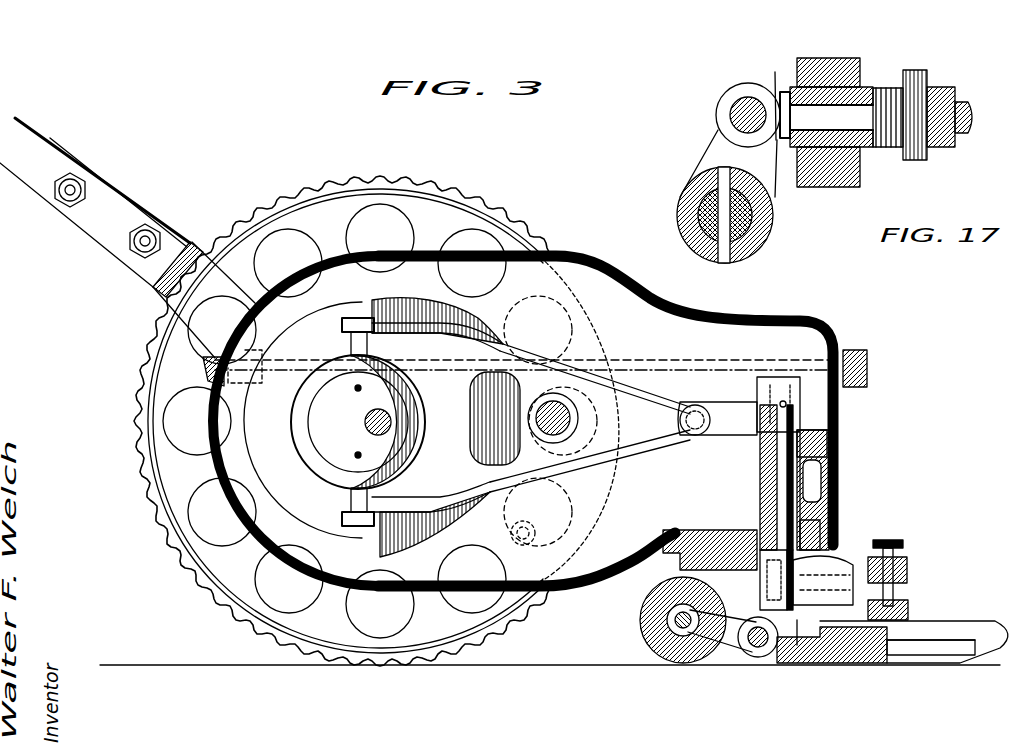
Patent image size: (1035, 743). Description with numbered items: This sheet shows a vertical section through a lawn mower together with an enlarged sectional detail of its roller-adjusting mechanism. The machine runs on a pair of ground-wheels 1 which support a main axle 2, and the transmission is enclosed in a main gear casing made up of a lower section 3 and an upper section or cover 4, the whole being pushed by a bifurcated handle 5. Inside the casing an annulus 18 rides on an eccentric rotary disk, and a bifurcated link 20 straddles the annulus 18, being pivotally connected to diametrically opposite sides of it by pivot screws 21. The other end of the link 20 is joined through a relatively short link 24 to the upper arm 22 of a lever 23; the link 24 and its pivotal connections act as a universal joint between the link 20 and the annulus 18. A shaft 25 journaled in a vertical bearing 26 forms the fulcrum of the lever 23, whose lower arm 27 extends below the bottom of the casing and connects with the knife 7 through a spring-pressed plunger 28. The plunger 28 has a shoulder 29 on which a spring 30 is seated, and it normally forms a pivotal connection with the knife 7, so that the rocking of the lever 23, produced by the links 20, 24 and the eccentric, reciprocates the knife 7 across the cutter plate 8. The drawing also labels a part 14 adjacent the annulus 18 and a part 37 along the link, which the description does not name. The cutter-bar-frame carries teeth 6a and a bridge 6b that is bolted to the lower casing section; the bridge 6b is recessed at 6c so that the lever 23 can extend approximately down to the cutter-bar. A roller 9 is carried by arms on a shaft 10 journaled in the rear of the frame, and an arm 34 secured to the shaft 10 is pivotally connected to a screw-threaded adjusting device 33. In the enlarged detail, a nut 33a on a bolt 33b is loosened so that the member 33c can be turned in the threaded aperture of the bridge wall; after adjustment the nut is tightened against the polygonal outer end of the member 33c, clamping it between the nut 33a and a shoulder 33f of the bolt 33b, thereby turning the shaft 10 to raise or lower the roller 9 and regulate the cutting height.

In FIG. 3, the ground-wheel 1 is at (155, 532).
In FIG. 3, the main axle 2 is at (367, 420).
In FIG. 3, the lower section of main gear casing 3 is at (410, 572).
In FIG. 3, the upper section or cover of main gear casing 4 is at (492, 252).
In FIG. 3, the bifurcated handle 5 is at (100, 207).
In FIG. 3, the cutter-bar teeth 6a is at (950, 641).
In FIG. 17, the bridge 6b is at (865, 172).
In FIG. 17, the recess 6c is at (832, 150).
In FIG. 3, the knife 7 is at (835, 655).
In FIG. 3, the cutter plate 8 is at (878, 642).
In FIG. 3, the roller 9 is at (652, 640).
In FIG. 3, the shaft 10 is at (760, 630).
In FIG. 17, the shaft 10 is at (702, 222).
In FIG. 3, the eccentric strap 14 is at (332, 452).
In FIG. 3, the annulus 18 is at (297, 420).
In FIG. 3, the bifurcated link 20 is at (648, 445).
In FIG. 3, the pivot screws 21 is at (342, 323).
In FIG. 3, the upper arm of lever 22 is at (750, 428).
In FIG. 3, the lever 23 is at (833, 552).
In FIG. 3, the link 24 is at (738, 408).
In FIG. 3, the shaft 25 is at (841, 441).
In FIG. 3, the vertical bearing 26 is at (758, 513).
In FIG. 3, the lower arm of lever 27 is at (828, 572).
In FIG. 3, the spring-pressed plunger 28 is at (905, 610).
In FIG. 3, the shoulder 29 is at (907, 583).
In FIG. 3, the spring 30 is at (897, 551).
In FIG. 3, the screw-threaded adjusting device 33 is at (797, 645).
In FIG. 17, the screw-threaded adjusting device 33 is at (935, 82).
In FIG. 17, the nut 33a is at (950, 102).
In FIG. 17, the bolt 33b is at (978, 118).
In FIG. 17, the threaded member 33c is at (896, 90).
In FIG. 17, the shoulder of bolt 33f is at (778, 95).
In FIG. 3, the arm 34 is at (705, 650).
In FIG. 17, the arm 34 is at (712, 150).
In FIG. 3, the connecting rod 37 is at (570, 412).